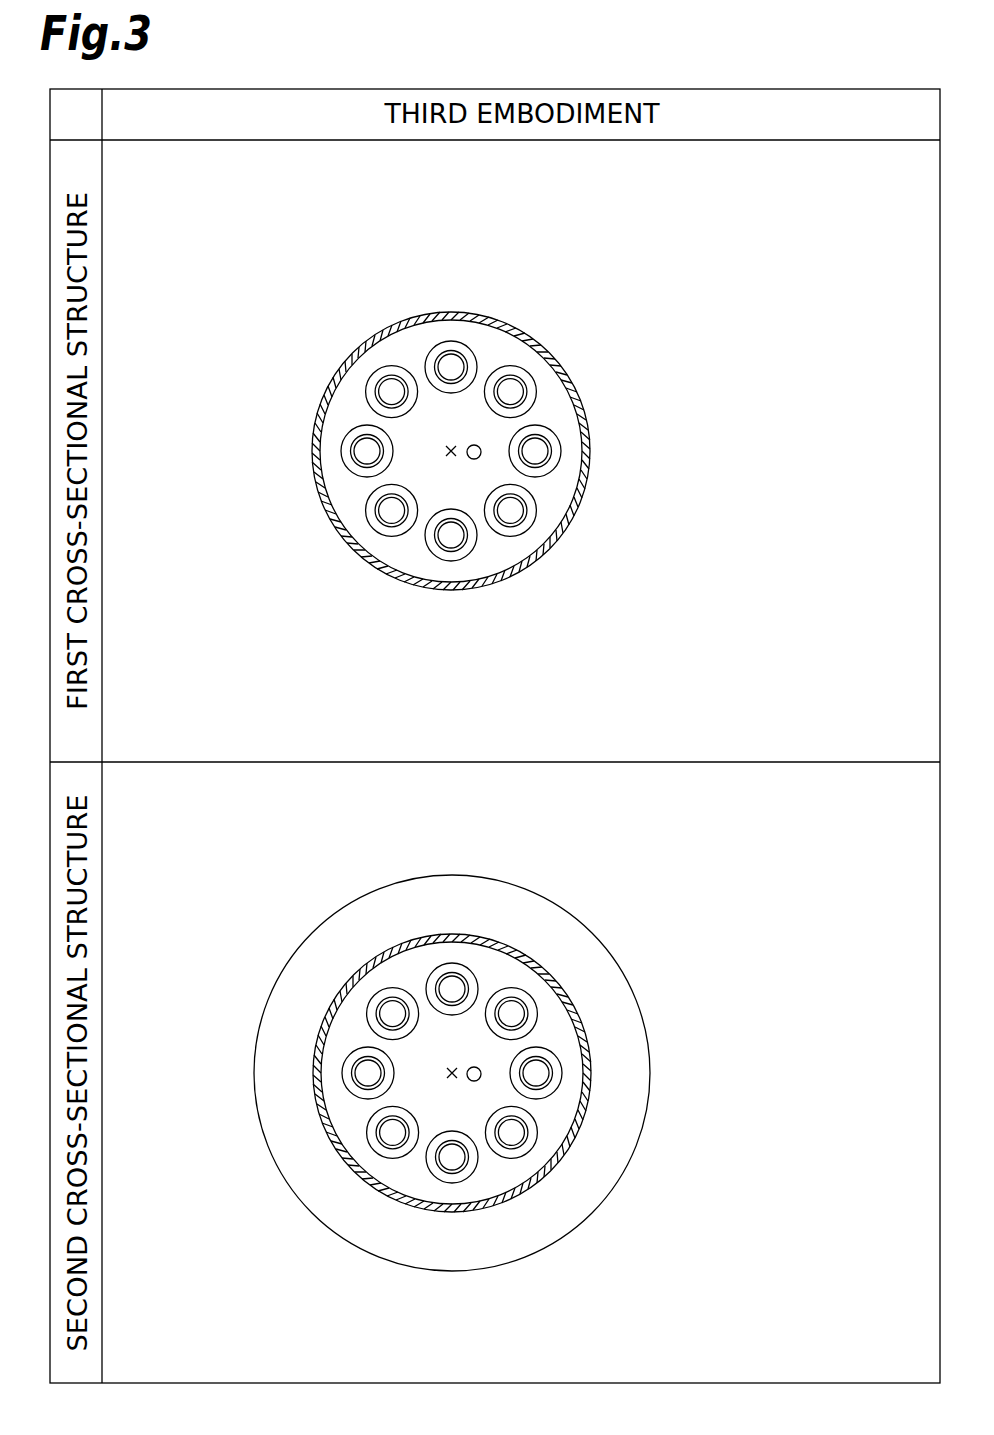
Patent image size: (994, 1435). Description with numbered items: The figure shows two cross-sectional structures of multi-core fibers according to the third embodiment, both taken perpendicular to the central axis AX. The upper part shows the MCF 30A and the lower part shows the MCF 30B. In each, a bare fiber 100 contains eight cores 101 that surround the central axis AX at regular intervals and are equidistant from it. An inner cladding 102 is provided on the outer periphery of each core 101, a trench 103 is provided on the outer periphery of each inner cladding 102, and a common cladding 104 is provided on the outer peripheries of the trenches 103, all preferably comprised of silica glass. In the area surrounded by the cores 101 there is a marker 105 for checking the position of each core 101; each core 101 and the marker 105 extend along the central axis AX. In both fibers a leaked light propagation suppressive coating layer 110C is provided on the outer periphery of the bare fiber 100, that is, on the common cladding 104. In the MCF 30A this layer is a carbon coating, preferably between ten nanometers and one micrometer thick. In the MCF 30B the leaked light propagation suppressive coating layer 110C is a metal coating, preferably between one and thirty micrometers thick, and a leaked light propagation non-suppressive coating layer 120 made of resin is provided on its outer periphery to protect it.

The MCF 30A is at (600, 368).
The MCF 30B is at (653, 975).
The bare fiber 100 is at (591, 444).
The core 101 is at (447, 367).
The inner cladding 102 is at (455, 347).
The trench 103 is at (467, 349).
The common cladding 104 is at (515, 358).
The marker 105 is at (471, 460).
The leaked light propagation suppressive coating layer 110C is at (584, 497).
The leaked light propagation non-suppressive coating layer 120 is at (612, 1120).
The central axis AX is at (449, 447).